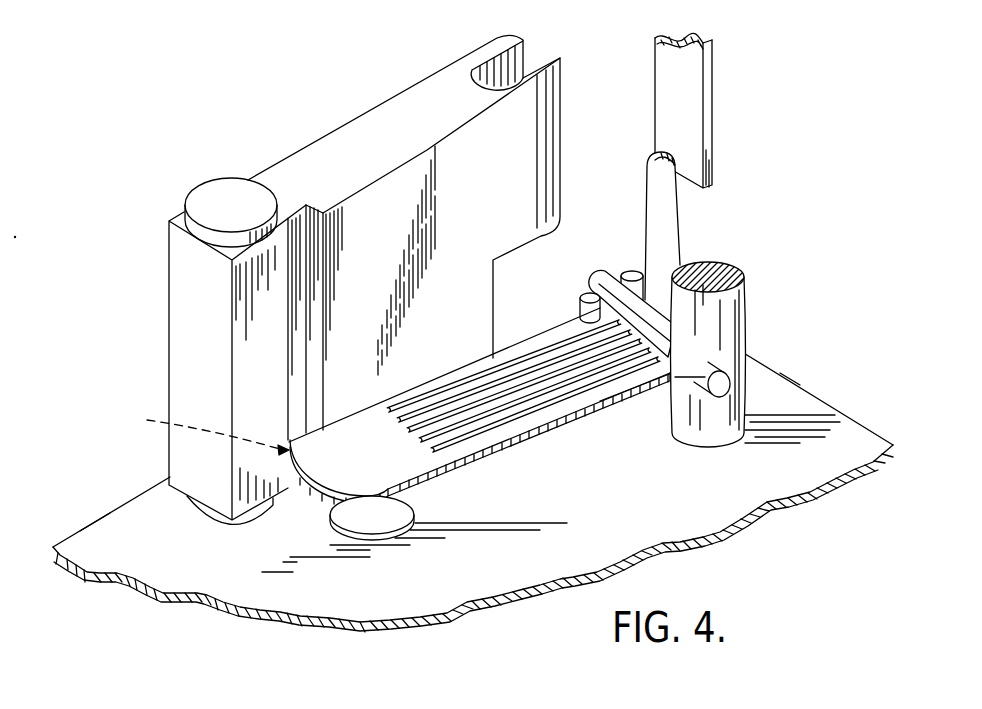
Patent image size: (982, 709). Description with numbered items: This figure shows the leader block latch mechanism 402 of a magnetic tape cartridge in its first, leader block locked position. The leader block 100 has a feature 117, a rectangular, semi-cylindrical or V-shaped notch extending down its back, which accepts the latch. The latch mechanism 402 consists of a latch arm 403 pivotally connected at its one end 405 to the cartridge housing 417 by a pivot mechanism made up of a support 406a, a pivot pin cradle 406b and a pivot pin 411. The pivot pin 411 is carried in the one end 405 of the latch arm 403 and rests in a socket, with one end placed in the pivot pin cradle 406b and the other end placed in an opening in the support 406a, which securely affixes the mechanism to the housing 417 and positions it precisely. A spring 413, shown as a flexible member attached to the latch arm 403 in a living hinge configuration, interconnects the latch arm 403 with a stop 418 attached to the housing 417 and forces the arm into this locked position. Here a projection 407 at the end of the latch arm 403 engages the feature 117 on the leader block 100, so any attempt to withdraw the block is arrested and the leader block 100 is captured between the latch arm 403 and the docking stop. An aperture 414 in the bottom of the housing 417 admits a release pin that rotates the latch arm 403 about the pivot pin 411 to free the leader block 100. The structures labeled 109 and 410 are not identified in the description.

The leader block 100 is at (193, 384).
The base surface 109 is at (118, 530).
The feature 117 is at (302, 222).
The leader block latch mechanism 402 is at (722, 506).
The latch arm 403 is at (308, 503).
The one end of latch arm 405 is at (660, 383).
The support 406a is at (727, 323).
The pivot pin cradle 406b is at (605, 273).
The projection 407 is at (191, 430).
The slots 410 is at (492, 415).
The pivot pin 411 is at (781, 464).
The spring 413 is at (680, 245).
The aperture 414 is at (385, 540).
The housing 417 is at (797, 380).
The stop 418 is at (710, 118).